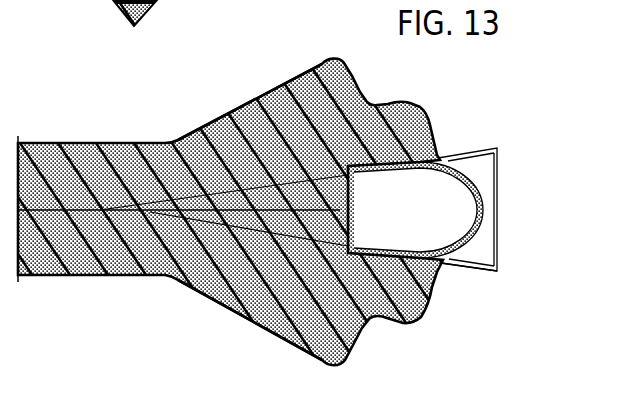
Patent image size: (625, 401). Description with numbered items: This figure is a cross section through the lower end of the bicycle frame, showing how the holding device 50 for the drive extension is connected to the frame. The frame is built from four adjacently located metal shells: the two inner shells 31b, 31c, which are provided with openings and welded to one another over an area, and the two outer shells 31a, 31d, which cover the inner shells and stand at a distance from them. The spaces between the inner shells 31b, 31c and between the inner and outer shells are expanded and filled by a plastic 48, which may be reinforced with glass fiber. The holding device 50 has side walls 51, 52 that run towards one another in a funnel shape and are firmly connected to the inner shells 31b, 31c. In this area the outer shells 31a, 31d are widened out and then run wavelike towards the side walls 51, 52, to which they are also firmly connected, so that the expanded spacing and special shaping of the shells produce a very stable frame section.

The plastic 48 is at (96, 153).
The outer shell 31a is at (273, 333).
The inner shell 31b is at (223, 298).
The inner shell 31c is at (214, 170).
The outer shell 31d is at (286, 77).
The holding device 50 is at (497, 201).
The side wall 51 is at (471, 150).
The side wall 52 is at (466, 269).